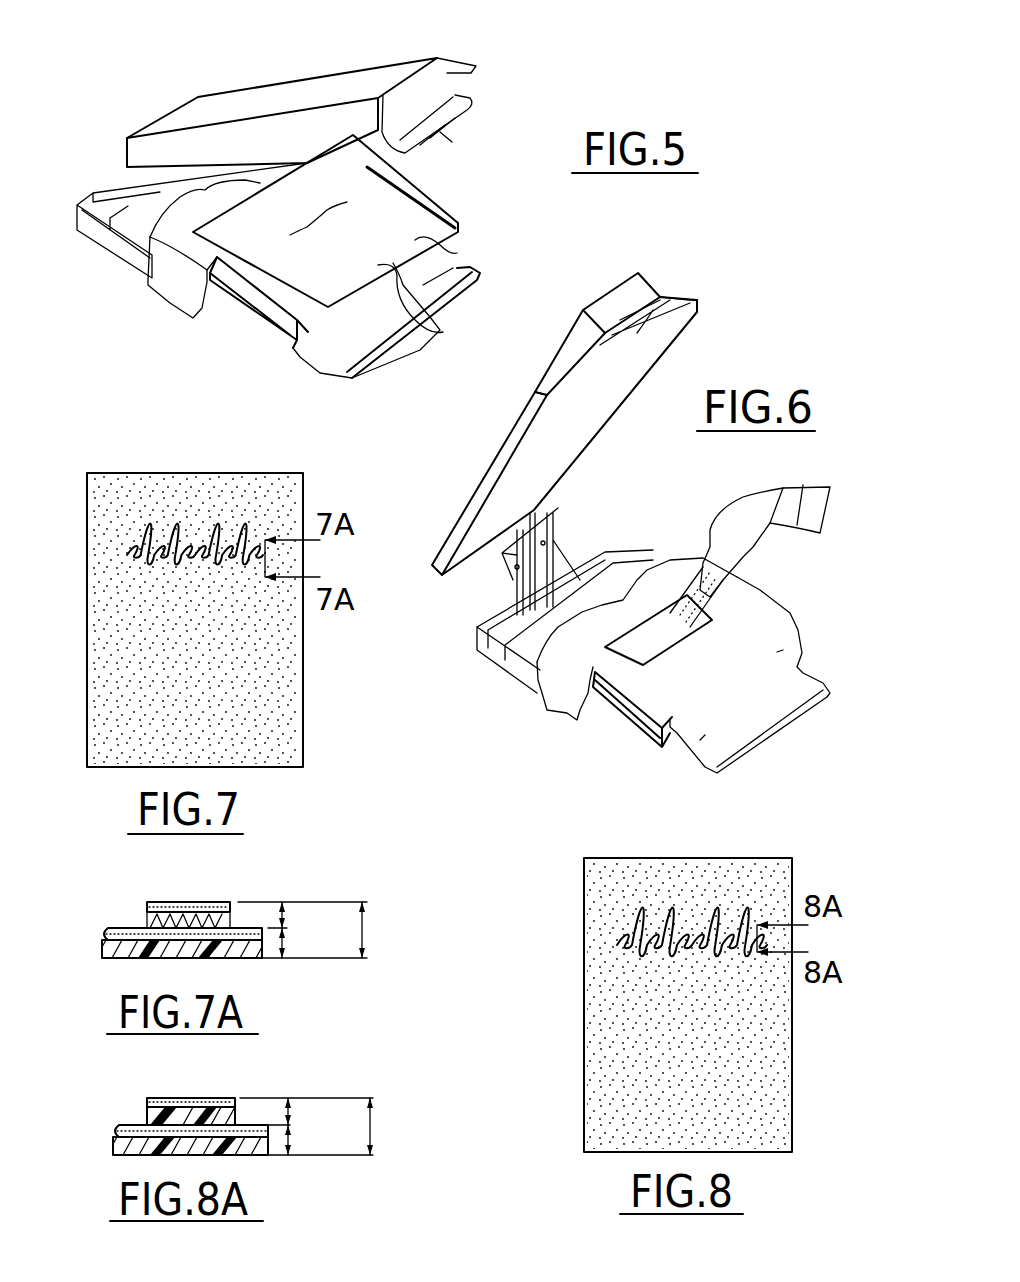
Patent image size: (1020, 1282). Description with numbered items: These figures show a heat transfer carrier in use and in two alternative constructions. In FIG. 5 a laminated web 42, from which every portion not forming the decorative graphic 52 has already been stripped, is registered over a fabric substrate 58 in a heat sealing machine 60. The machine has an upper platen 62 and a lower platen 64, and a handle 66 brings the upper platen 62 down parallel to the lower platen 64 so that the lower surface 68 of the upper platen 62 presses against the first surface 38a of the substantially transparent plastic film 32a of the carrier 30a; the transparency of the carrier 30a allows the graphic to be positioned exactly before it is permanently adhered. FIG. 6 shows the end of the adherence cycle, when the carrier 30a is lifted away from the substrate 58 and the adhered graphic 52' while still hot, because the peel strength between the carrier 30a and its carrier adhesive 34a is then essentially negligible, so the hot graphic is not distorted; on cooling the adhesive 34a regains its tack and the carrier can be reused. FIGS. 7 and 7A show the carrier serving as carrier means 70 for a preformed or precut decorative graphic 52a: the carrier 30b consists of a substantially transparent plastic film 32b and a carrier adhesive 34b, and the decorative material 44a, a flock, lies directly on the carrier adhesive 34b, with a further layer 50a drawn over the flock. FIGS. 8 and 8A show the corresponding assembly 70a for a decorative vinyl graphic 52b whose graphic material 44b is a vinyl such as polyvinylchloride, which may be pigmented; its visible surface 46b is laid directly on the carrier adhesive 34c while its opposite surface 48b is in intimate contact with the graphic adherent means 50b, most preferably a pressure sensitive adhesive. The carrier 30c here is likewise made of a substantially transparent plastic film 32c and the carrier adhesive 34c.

In FIG. 5, the heat sealing machine 60 is at (292, 62).
In FIG. 5, the upper platen 62 is at (472, 68).
In FIG. 6, the upper platen 62 is at (513, 423).
In FIG. 5, the handle 66 is at (443, 143).
In FIG. 6, the handle 66 is at (653, 313).
In FIG. 5, the lower surface 68 is at (460, 95).
In FIG. 6, the lower surface 68 is at (598, 442).
In FIG. 5, the laminated web 42 is at (398, 197).
In FIG. 5, the lower platen 64 is at (453, 227).
In FIG. 6, the lower platen 64 is at (530, 640).
In FIG. 5, the first surface 38a is at (452, 253).
In FIG. 5, the substantially transparent plastic film 32a is at (443, 332).
In FIG. 5, the carrier 30a is at (353, 293).
In FIG. 6, the carrier 30a is at (735, 585).
In FIG. 5, the decorative graphic 52 is at (257, 279).
In FIG. 6, the adhered graphic 52' is at (683, 665).
In FIG. 5, the fabric substrate 58 is at (350, 340).
In FIG. 6, the fabric substrate 58 is at (668, 687).
In FIG. 6, the carrier adhesive 34a is at (738, 552).
In FIG. 7, the preformed or precut decorative graphic 52a is at (173, 513).
In FIG. 7A, the preformed or precut decorative graphic 52a is at (288, 915).
In FIG. 7, the carrier means 70 is at (68, 522).
In FIG. 7A, the carrier means 70 is at (368, 917).
In FIG. 7, the carrier adhesive 34b is at (285, 705).
In FIG. 7A, the carrier adhesive 34b is at (162, 910).
In FIG. 7A, the decorative material 44a is at (148, 922).
In FIG. 7A, the release layer 50a is at (195, 903).
In FIG. 7A, the substantially transparent plastic film 32b is at (105, 947).
In FIG. 7A, the carrier 30b is at (287, 945).
In FIG. 8, the decorative vinyl graphic 52b is at (670, 898).
In FIG. 8A, the decorative vinyl graphic 52b is at (293, 1107).
In FIG. 8, the pad assembly 70a is at (565, 1003).
In FIG. 8A, the pad assembly 70a is at (383, 1123).
In FIG. 8, the carrier adhesive 34c is at (597, 1055).
In FIG. 8A, the carrier adhesive 34c is at (115, 1130).
In FIG. 8A, the graphic material 44b is at (147, 1112).
In FIG. 8A, the graphic adherent means 50b is at (183, 1087).
In FIG. 8A, the opposite surface 48b is at (207, 1103).
In FIG. 8A, the substantially transparent plastic film 32c is at (115, 1145).
In FIG. 8A, the carrier 30c is at (293, 1135).
In FIG. 8A, the visible surface 46b is at (250, 1140).